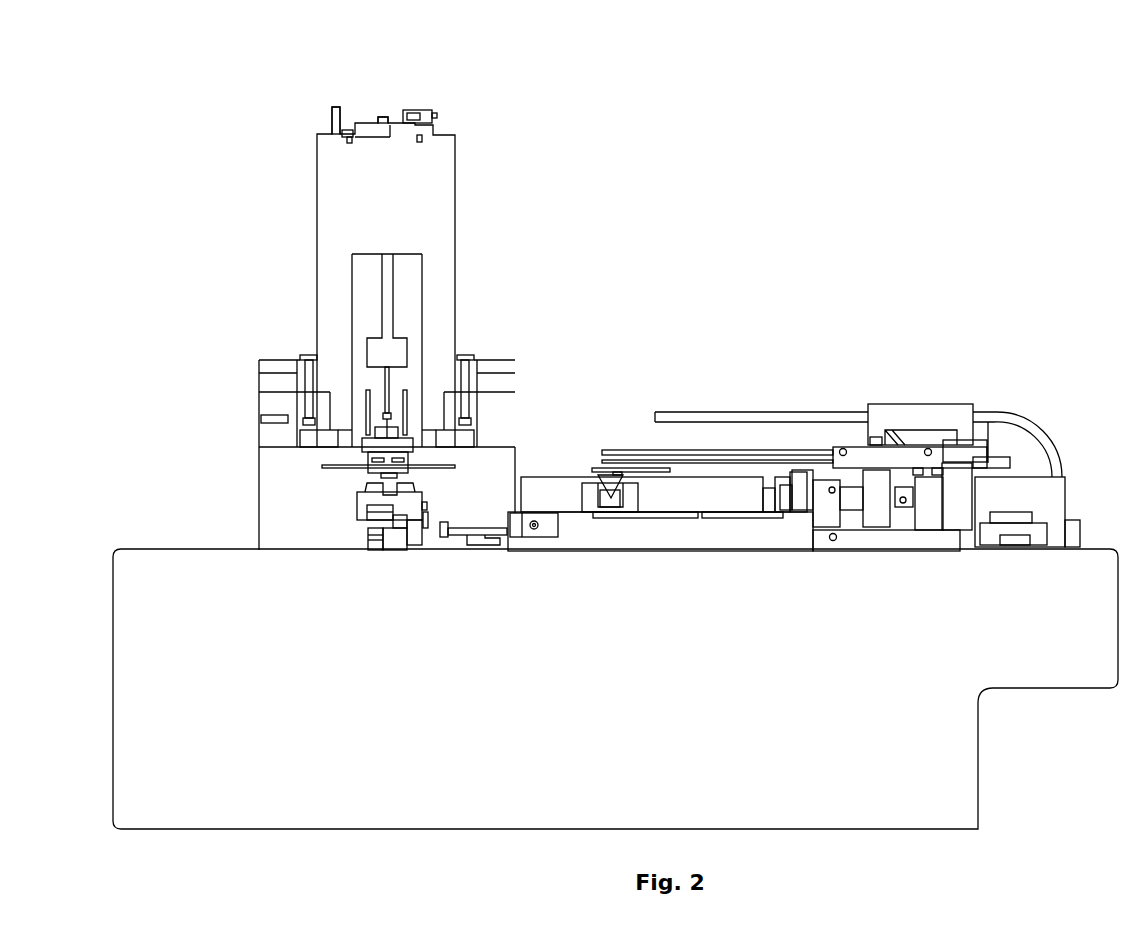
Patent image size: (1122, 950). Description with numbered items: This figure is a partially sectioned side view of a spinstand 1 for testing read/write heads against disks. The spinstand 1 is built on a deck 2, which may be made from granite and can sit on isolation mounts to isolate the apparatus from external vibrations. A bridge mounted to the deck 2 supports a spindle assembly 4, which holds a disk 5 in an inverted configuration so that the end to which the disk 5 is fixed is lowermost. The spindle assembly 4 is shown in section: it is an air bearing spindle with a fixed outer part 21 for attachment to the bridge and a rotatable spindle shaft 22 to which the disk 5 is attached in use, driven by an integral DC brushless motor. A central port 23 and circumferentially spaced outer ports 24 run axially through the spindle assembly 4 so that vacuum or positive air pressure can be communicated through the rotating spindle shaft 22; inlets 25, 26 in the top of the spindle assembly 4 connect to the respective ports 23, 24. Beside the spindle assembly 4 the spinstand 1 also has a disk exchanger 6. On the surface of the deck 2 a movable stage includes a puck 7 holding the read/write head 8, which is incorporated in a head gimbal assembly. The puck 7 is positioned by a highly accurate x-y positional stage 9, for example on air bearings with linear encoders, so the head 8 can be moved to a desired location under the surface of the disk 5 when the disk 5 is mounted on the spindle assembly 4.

The spinstand 1 is at (718, 280).
The deck 2 is at (945, 730).
The spindle assembly 4 is at (433, 205).
The disk 5 is at (345, 472).
The disk exchanger 6 is at (355, 515).
The puck 7 is at (577, 535).
The read/write head 8 is at (592, 461).
The x-y positional stage 9 is at (940, 393).
The fixed outer part 21 is at (348, 189).
The spindle shaft 22 is at (382, 350).
The central port 23 is at (384, 372).
The outer ports 24 is at (363, 421).
The inlet 25 is at (335, 104).
The inlet 26 is at (383, 115).